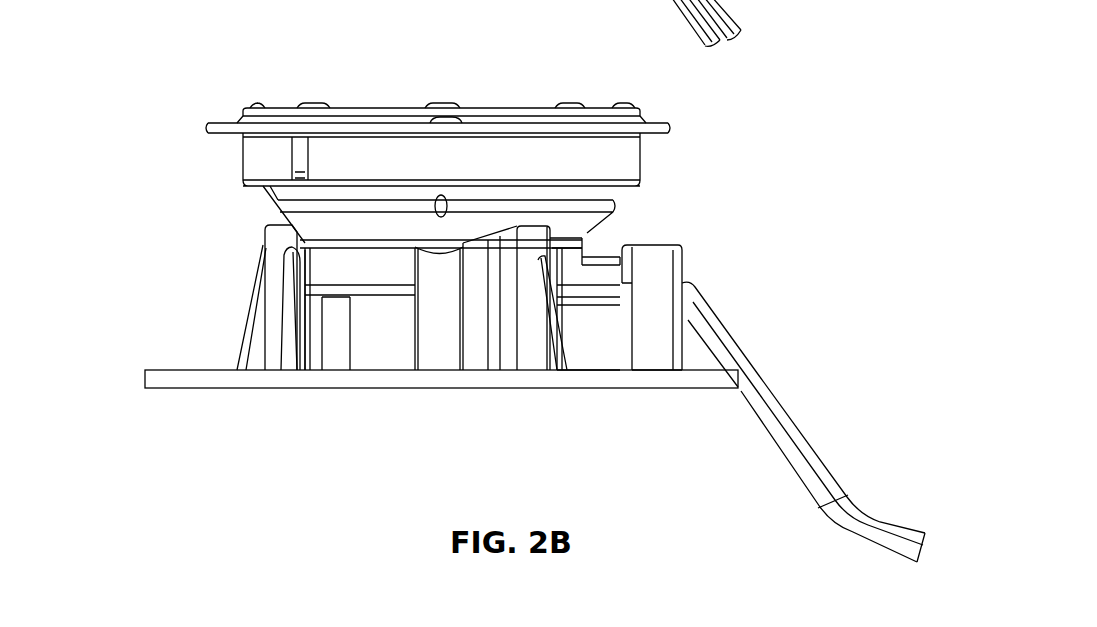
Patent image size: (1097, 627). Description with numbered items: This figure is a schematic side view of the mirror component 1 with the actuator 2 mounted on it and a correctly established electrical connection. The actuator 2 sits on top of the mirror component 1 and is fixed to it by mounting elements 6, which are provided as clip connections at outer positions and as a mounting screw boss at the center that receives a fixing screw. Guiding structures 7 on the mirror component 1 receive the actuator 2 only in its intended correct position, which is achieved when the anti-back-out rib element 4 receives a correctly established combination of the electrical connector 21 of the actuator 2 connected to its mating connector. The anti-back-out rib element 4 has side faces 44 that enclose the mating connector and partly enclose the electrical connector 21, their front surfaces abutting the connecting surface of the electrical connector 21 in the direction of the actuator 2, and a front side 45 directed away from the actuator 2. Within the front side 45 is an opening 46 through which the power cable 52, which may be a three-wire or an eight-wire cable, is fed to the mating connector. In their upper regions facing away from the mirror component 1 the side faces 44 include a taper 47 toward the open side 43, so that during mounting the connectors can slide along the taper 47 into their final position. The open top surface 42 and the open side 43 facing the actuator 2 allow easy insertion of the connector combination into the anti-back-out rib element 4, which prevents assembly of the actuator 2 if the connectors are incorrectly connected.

The mirror component 1 is at (129, 376).
The actuator 2 is at (484, 100).
The anti-back-out rib element 4 is at (714, 286).
The mounting element 6 is at (261, 243).
The guiding structure 7 is at (478, 298).
The electrical connector 21 is at (580, 298).
The open top surface 42 is at (655, 239).
The open side 43 is at (608, 345).
The side face 44 is at (644, 339).
The front side 45 is at (695, 349).
The opening 46 is at (692, 294).
The taper 47 is at (617, 246).
The power cable 52 is at (818, 430).